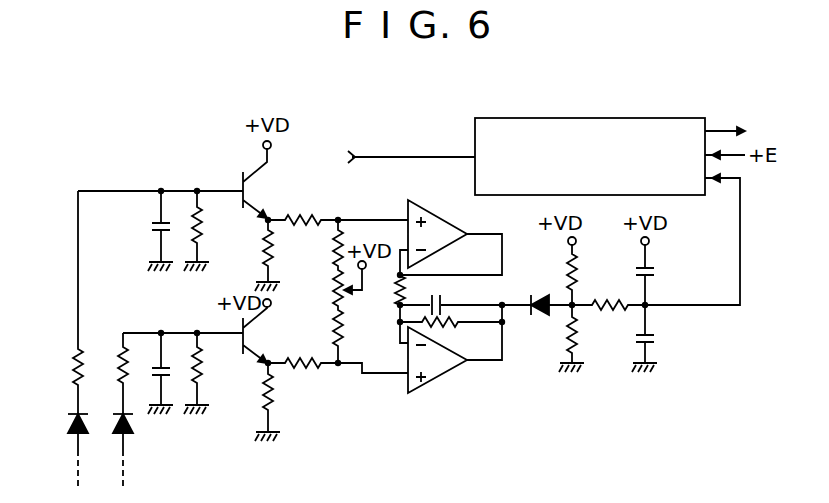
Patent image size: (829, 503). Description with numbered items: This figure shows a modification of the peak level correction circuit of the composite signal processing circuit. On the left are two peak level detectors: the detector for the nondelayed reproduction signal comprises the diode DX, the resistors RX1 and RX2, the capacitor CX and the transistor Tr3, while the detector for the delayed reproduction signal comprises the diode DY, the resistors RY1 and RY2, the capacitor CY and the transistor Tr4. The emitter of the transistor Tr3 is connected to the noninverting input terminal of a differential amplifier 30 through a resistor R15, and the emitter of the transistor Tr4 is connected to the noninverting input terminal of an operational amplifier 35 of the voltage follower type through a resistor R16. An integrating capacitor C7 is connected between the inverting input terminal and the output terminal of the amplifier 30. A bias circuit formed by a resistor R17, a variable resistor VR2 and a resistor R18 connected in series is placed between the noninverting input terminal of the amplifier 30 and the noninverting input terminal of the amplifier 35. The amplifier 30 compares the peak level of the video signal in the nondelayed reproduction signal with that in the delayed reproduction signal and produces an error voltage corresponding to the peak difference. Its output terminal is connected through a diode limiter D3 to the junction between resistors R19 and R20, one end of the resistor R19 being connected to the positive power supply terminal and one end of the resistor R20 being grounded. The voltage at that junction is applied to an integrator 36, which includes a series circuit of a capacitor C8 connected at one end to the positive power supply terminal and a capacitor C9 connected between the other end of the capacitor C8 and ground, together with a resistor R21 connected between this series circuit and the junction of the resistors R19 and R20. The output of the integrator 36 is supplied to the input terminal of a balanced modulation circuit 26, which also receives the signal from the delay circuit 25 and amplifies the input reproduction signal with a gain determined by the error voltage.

The capacitor CY is at (150, 226).
The resistor RY2 is at (207, 215).
The transistor Tr4 is at (262, 189).
The resistor R16 is at (303, 225).
The resistor R18 is at (346, 225).
The variable resistor VR2 is at (332, 289).
The resistor R17 is at (348, 343).
The transistor Tr3 is at (262, 338).
The resistor R15 is at (303, 373).
The resistor RX1 is at (118, 350).
The diode DX is at (132, 435).
The resistor RY1 is at (72, 370).
The diode DY is at (70, 426).
The capacitor CX is at (152, 375).
The resistor RX2 is at (202, 374).
The operational amplifier 35 is at (446, 208).
The differential amplifier 30 is at (440, 378).
The integrating capacitor C7 is at (440, 288).
The diode limiter D3 is at (538, 318).
The resistor R19 is at (568, 271).
The resistor R20 is at (578, 348).
The resistor R21 is at (606, 313).
The integrator 36 is at (628, 290).
The capacitor C8 is at (658, 270).
The capacitor C9 is at (657, 338).
The balanced modulation circuit 26 is at (580, 117).
The delay circuit 25 is at (395, 134).